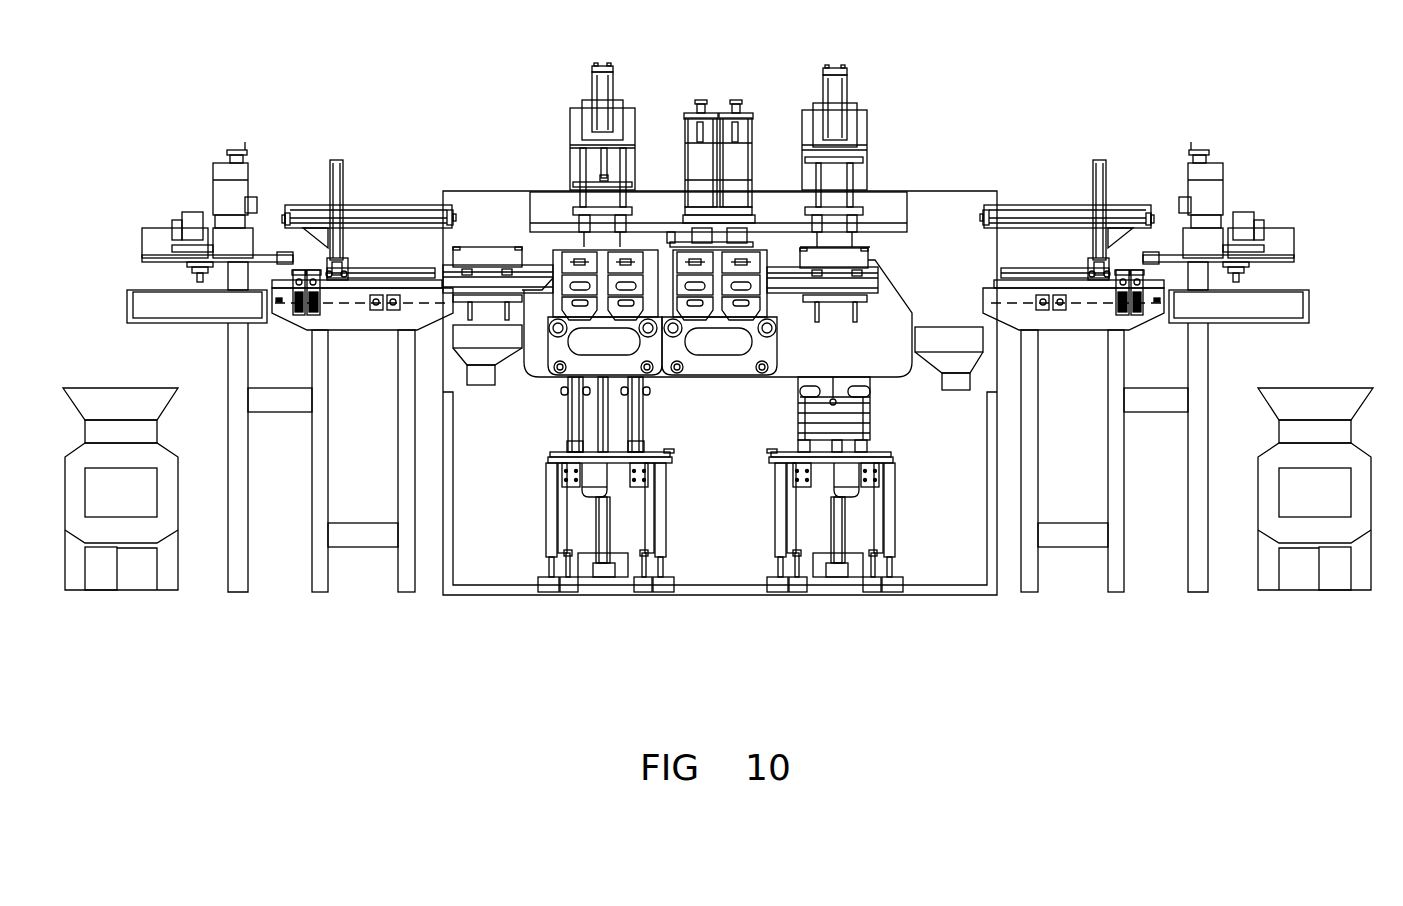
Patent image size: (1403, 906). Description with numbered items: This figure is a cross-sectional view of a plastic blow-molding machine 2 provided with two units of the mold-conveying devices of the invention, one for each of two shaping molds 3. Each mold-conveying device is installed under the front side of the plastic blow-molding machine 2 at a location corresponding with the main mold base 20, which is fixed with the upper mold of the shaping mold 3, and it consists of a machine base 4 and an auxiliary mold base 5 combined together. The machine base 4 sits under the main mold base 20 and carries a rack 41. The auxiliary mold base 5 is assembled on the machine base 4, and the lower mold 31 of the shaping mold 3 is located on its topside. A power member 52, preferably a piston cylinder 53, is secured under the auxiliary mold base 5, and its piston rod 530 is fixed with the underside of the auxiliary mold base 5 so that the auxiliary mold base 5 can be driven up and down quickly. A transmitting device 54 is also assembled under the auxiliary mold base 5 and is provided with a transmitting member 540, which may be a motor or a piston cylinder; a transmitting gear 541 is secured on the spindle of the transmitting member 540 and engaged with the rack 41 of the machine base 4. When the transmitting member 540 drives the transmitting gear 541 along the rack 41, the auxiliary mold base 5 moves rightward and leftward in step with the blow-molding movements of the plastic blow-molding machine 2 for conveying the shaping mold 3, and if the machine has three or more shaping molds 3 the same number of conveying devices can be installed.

The plastic blow-molding machine 2 is at (701, 159).
The shaping mold 3 is at (695, 154).
The main mold base 20 is at (616, 245).
The lower mold 31 is at (835, 363).
The auxiliary mold base 5 is at (799, 408).
The piston rod 530 is at (719, 414).
The machine base 4 is at (718, 527).
The rack 41 is at (720, 442).
The transmitting gear 541 is at (719, 440).
The transmitting device 54 is at (720, 478).
The transmitting member 540 is at (720, 497).
The piston cylinder 53 is at (720, 533).
The power member 52 is at (605, 568).